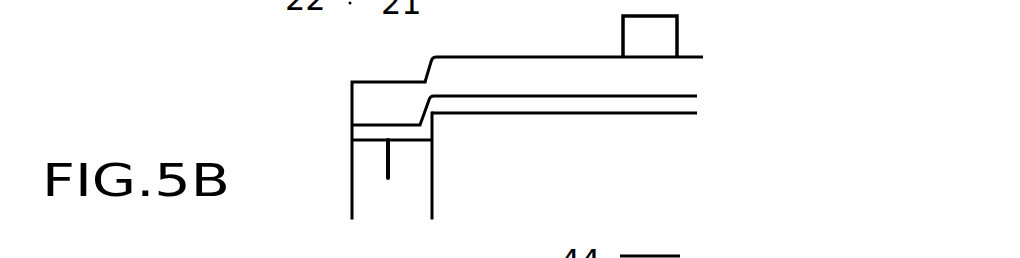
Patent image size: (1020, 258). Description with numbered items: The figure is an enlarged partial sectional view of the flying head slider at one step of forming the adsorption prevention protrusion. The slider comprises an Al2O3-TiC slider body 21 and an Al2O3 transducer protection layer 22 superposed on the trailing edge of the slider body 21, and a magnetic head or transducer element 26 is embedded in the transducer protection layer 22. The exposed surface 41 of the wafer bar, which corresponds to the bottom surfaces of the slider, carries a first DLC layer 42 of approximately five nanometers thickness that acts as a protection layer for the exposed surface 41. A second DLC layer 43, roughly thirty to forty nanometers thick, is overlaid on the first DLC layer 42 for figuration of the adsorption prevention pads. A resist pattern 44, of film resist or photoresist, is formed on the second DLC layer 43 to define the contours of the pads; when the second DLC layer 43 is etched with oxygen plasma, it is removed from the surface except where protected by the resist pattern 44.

The slider body 21 is at (432, 207).
The transducer protection layer 22 is at (352, 206).
The transducer element 26 is at (384, 161).
The exposed surface 41 is at (698, 110).
The first DLC layer 42 is at (690, 93).
The second DLC layer 43 is at (518, 56).
The resist pattern 44 is at (679, 31).